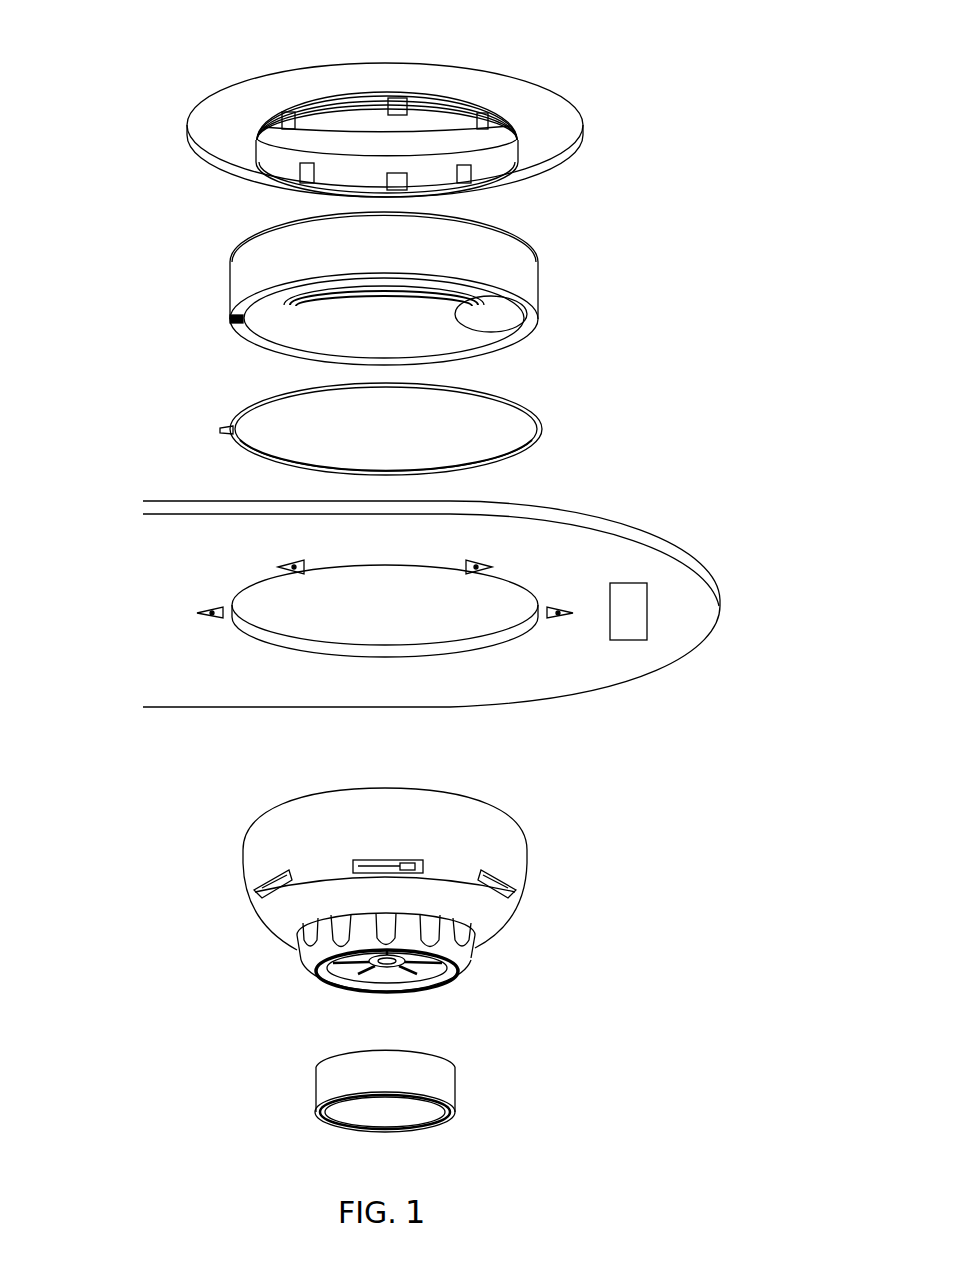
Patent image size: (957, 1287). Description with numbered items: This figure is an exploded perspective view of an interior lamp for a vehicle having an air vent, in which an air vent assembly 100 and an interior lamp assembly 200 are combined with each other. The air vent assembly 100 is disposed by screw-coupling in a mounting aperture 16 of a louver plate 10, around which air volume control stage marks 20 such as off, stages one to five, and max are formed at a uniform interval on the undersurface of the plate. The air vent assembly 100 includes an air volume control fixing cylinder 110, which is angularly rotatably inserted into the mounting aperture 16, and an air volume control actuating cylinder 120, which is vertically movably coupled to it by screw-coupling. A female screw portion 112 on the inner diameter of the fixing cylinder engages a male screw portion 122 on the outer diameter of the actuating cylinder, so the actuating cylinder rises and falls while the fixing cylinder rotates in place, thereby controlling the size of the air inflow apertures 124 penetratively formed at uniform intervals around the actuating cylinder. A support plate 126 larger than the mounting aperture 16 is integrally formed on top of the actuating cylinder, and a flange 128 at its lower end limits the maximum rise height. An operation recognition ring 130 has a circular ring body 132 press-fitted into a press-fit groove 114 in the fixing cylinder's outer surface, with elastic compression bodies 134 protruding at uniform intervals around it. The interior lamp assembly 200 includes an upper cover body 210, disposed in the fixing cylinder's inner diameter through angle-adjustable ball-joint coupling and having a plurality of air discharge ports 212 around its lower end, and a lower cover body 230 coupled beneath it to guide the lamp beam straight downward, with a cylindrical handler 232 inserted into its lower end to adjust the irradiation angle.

The louver plate 10 is at (694, 528).
The mounting aperture 16 is at (500, 633).
The air volume control stage marks 20 is at (561, 608).
The air vent assembly 100 is at (87, 70).
The air volume control fixing cylinder 110 is at (555, 289).
The female screw portion 112 is at (500, 330).
The press-fit groove 114 is at (545, 250).
The air volume control actuating cylinder 120 is at (212, 170).
The male screw portion 122 is at (514, 127).
The air inflow aperture 124 is at (467, 185).
The support plate 126 is at (247, 84).
The flange 128 is at (513, 158).
The operation recognition ring 130 is at (558, 427).
The circular ring body 132 is at (247, 460).
The elastic compression body 134 is at (227, 430).
The interior lamp assembly 200 is at (226, 795).
The upper cover body 210 is at (538, 836).
The air discharge port 212 is at (513, 883).
The lower cover body 230 is at (492, 925).
The handler 232 is at (448, 1087).